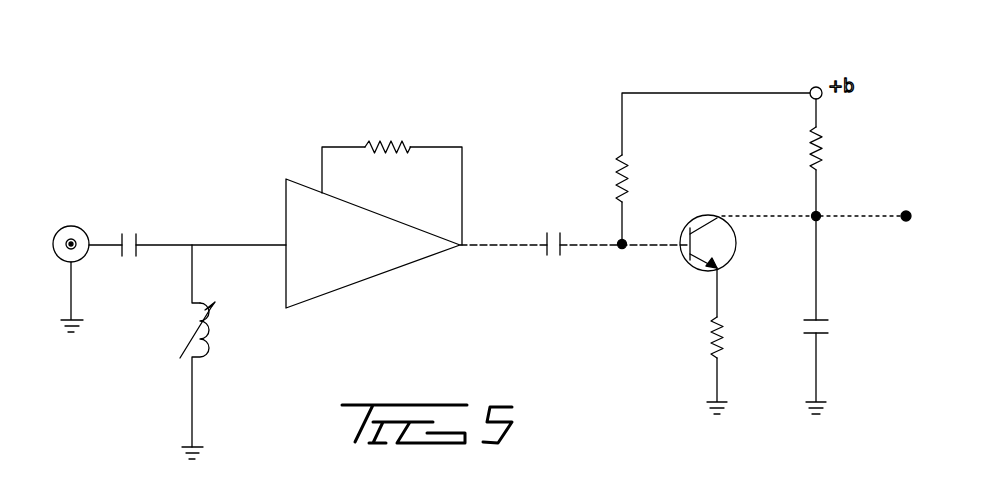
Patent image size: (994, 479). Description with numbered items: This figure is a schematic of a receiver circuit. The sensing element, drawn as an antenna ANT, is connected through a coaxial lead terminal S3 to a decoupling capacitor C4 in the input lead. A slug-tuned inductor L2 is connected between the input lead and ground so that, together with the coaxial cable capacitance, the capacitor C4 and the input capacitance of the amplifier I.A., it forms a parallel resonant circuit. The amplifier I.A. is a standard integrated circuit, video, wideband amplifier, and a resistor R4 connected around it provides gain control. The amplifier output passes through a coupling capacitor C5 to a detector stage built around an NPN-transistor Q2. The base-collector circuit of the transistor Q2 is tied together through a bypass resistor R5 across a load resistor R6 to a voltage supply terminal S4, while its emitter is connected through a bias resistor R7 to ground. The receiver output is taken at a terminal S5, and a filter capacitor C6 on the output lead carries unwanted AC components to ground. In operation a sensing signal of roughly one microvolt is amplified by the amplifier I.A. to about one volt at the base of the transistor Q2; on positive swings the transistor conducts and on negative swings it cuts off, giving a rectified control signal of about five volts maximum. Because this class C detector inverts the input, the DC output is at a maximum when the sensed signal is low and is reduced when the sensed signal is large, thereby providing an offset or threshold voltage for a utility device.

The antenna ANT is at (71, 261).
The coaxial lead terminal S3 is at (83, 231).
The decoupling capacitor C4 is at (140, 242).
The slug-tuned inductor L2 is at (204, 358).
The amplifier I.A. is at (352, 287).
The resistor R4 is at (412, 144).
The coupling capacitor C5 is at (565, 253).
The bypass resistor R5 is at (620, 174).
The NPN-transistor Q2 is at (688, 268).
The bias resistor R7 is at (718, 352).
The voltage supply terminal S4 is at (822, 70).
The load resistor R6 is at (820, 132).
The filter capacitor C6 is at (838, 337).
The terminal S5 is at (902, 222).